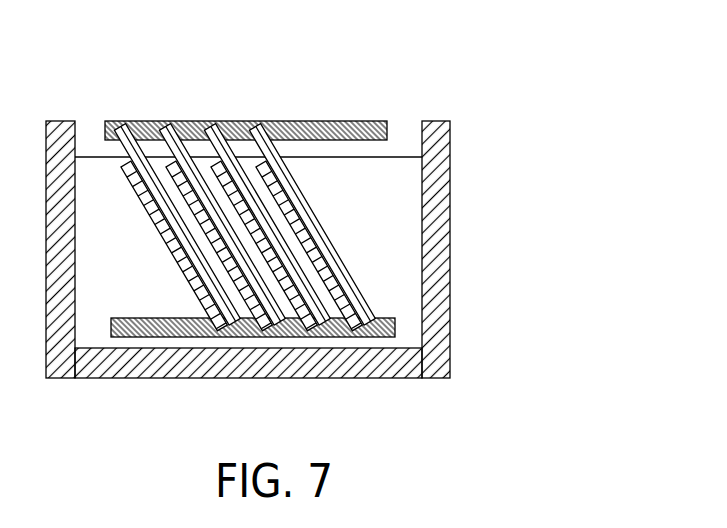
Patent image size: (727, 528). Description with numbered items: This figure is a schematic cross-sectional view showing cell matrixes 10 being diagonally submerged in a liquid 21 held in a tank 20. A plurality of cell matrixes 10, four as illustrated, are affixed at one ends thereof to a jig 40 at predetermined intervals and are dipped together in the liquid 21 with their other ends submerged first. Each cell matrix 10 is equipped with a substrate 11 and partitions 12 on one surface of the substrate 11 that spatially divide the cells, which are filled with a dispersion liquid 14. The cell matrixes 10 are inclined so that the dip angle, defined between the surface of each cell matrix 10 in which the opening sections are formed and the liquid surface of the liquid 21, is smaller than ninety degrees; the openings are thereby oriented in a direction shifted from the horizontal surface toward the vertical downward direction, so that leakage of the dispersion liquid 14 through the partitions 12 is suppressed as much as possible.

The cell matrix 10 is at (148, 202).
The substrate 11 is at (319, 224).
The partitions 12 is at (186, 273).
The dispersion liquid 14 is at (152, 259).
The tank 20 is at (452, 225).
The liquid 21 is at (402, 244).
The jig 40 is at (346, 121).